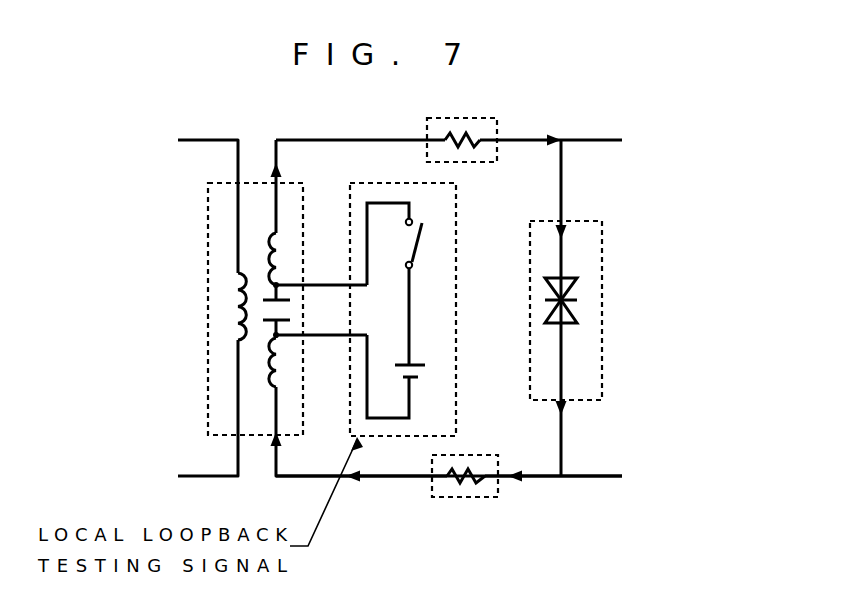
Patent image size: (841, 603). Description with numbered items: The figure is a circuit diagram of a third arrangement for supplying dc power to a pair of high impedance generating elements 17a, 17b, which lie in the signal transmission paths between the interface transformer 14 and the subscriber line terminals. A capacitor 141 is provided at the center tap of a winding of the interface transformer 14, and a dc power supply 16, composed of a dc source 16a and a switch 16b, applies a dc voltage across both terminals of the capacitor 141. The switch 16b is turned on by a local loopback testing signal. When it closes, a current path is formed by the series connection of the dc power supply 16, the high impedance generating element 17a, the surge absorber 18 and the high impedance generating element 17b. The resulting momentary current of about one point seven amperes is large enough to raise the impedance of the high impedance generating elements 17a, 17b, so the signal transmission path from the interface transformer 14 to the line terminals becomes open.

The interface transformer 14 is at (208, 287).
The capacitor 141 is at (293, 309).
The dc power supply 16 is at (432, 309).
The dc source 16a is at (430, 373).
The switch 16b is at (407, 242).
The high impedance generating element 17a is at (450, 118).
The high impedance generating element 17b is at (447, 497).
The surge absorber 18 is at (602, 287).